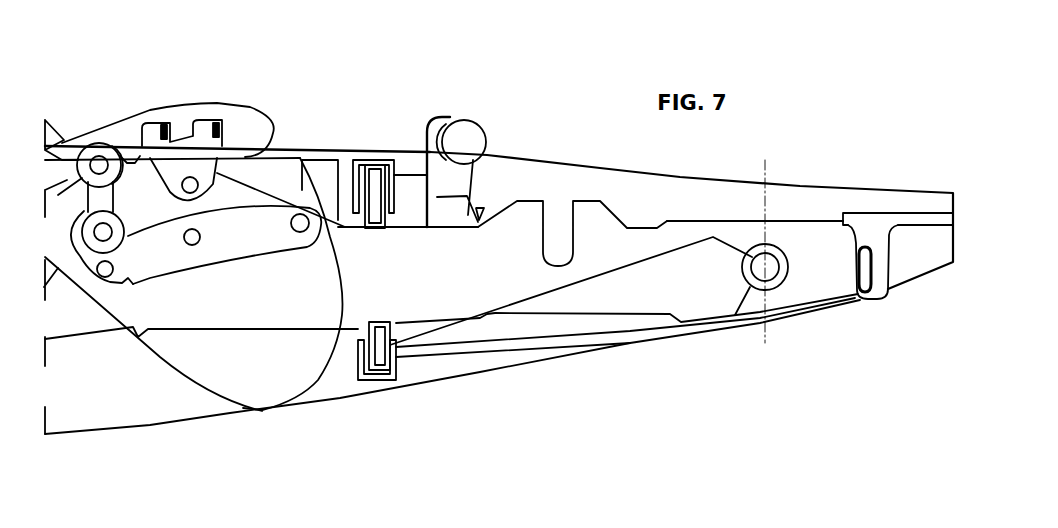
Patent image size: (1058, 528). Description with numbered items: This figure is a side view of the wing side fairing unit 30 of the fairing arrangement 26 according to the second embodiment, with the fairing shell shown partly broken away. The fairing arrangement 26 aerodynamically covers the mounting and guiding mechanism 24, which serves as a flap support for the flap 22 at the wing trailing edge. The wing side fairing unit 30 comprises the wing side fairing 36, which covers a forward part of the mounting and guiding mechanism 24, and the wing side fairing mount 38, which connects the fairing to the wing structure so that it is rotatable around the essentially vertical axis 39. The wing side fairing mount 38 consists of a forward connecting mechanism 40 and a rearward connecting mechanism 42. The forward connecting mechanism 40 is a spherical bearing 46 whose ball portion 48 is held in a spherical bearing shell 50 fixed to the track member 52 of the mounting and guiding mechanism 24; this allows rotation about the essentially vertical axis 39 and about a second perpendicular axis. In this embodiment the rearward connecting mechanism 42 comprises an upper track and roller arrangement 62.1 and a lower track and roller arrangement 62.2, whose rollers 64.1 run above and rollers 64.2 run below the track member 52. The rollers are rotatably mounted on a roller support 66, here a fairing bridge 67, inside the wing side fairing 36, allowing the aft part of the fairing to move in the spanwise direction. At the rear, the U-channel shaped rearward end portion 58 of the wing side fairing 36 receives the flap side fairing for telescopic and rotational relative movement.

The flap 22 is at (133, 112).
The mounting and guiding mechanism 24 is at (492, 233).
The fairing arrangement 26 is at (845, 397).
The wing side fairing unit 30 is at (750, 397).
The wing side fairing 36 is at (582, 363).
The wing side fairing mount 38 is at (410, 377).
The essentially vertical axis 39 is at (768, 161).
The forward connecting mechanism 40 is at (786, 250).
The rearward connecting mechanism 42 is at (370, 385).
The spherical bearing 46 is at (753, 257).
The ball portion 48 is at (790, 306).
The spherical bearing shell 50 is at (770, 290).
The track member 52 is at (617, 250).
The rearward end portion 58 is at (300, 406).
The upper track and roller arrangement 62.1 is at (347, 156).
The lower track and roller arrangement 62.2 is at (402, 381).
The rollers 64.1 is at (395, 157).
The rollers 64.2 is at (408, 358).
The roller support 66 is at (377, 158).
The fairing bridge 67 is at (360, 160).